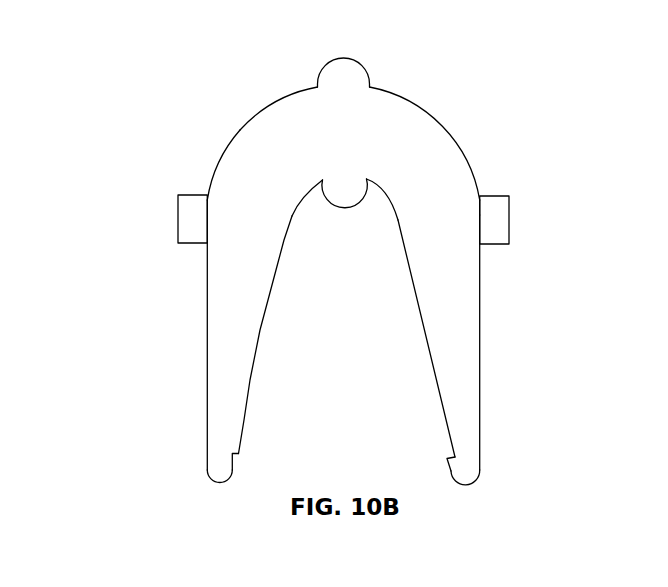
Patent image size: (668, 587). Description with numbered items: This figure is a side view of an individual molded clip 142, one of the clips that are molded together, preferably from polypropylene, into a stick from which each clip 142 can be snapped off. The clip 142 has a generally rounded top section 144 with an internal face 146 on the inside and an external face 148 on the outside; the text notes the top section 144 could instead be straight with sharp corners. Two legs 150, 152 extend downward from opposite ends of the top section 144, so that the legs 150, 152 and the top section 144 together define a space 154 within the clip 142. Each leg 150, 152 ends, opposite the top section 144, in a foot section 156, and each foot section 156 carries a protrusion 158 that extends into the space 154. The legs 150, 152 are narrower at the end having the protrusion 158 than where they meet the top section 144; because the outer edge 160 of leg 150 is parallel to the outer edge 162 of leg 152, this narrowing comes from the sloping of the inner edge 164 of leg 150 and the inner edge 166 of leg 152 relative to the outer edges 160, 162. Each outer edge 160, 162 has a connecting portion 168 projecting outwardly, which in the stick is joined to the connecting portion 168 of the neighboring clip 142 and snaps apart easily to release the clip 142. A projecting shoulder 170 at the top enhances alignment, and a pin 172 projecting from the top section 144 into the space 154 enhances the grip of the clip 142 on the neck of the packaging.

The clip 142 is at (180, 46).
The top section 144 is at (415, 127).
The internal face 146 is at (380, 193).
The external face 148 is at (305, 86).
The leg 150 is at (472, 208).
The leg 152 is at (227, 182).
The space 154 is at (363, 414).
The foot section 156 is at (207, 471).
The protrusion 158 is at (232, 471).
The outer edge 160 is at (483, 278).
The outer edge 162 is at (205, 297).
The inner edge 164 is at (422, 323).
The inner edge 166 is at (277, 276).
The connecting portion 168 is at (188, 220).
The projecting shoulder 170 is at (342, 73).
The pin 172 is at (340, 193).